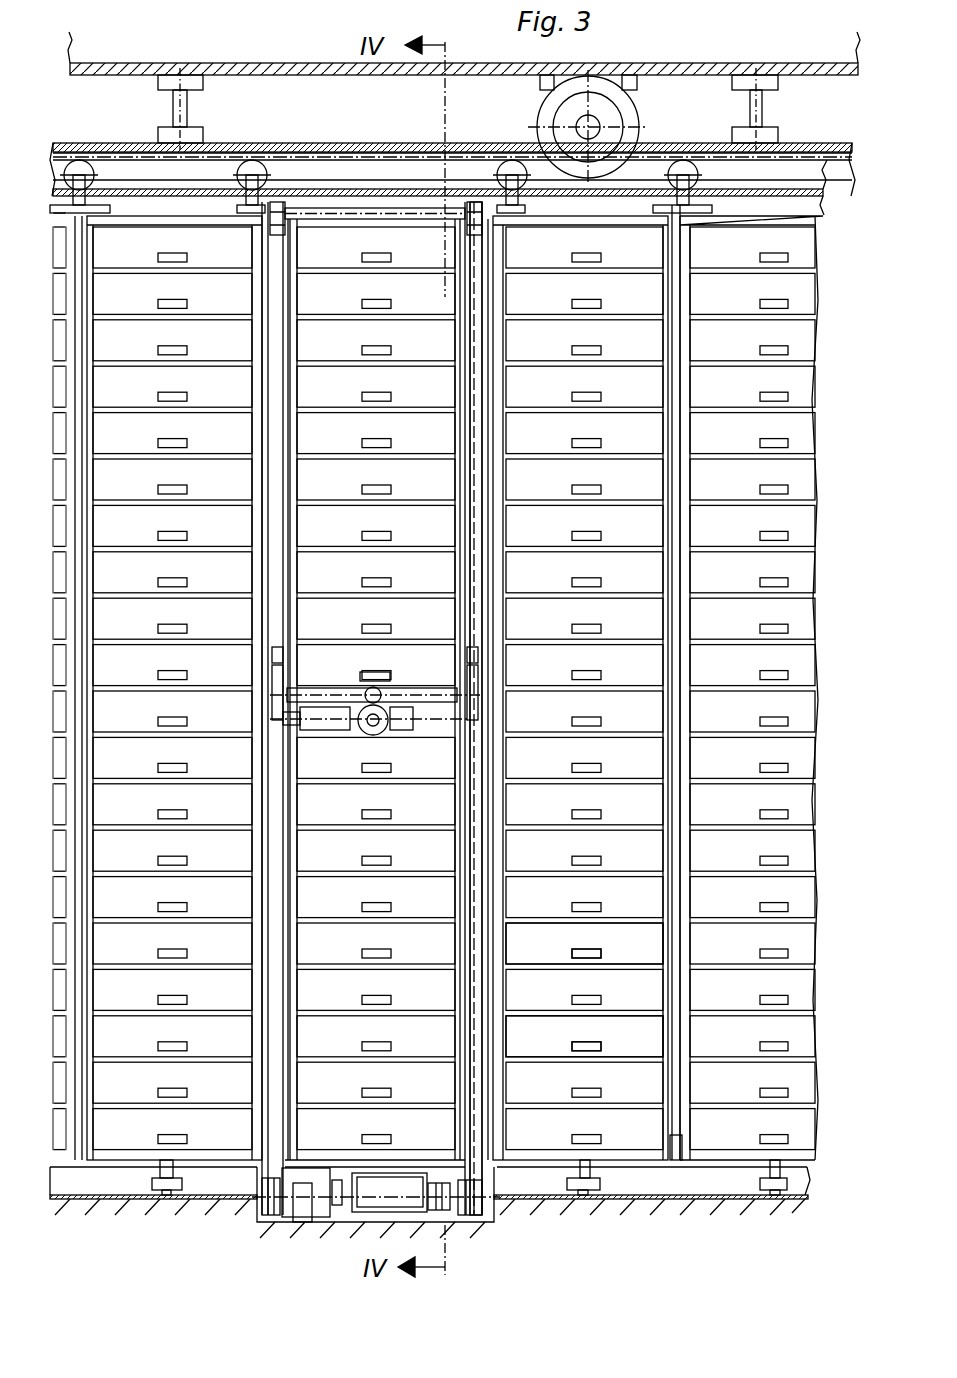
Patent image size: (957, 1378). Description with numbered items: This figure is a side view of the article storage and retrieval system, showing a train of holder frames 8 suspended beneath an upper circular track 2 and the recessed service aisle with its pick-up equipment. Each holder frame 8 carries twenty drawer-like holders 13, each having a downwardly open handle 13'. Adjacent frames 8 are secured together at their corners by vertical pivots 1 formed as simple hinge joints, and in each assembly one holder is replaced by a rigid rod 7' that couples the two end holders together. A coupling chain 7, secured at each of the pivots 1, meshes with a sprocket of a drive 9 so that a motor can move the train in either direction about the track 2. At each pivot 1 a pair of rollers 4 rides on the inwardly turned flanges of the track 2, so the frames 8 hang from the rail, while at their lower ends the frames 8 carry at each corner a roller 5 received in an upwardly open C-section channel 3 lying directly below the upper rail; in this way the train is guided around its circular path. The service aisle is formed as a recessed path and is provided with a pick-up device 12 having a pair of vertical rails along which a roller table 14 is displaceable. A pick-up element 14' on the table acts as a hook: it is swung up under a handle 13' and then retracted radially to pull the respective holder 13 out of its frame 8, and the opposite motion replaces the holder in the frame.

The vertical pivot 1 is at (92, 222).
The upper circular track 2 is at (82, 145).
The C-section channel 3 is at (137, 1200).
The roller 4 is at (665, 175).
The roller 5 is at (575, 1186).
The coupling chain 7 is at (452, 135).
The rigid rod 7' is at (452, 175).
The holder frame 8 is at (80, 415).
The drive 9 is at (558, 118).
The pick-up device 12 is at (480, 652).
The drawer-like holder 13 is at (584, 943).
The handle 13' is at (584, 1036).
The roller table 14 is at (386, 675).
The pick-up element 14' is at (349, 739).